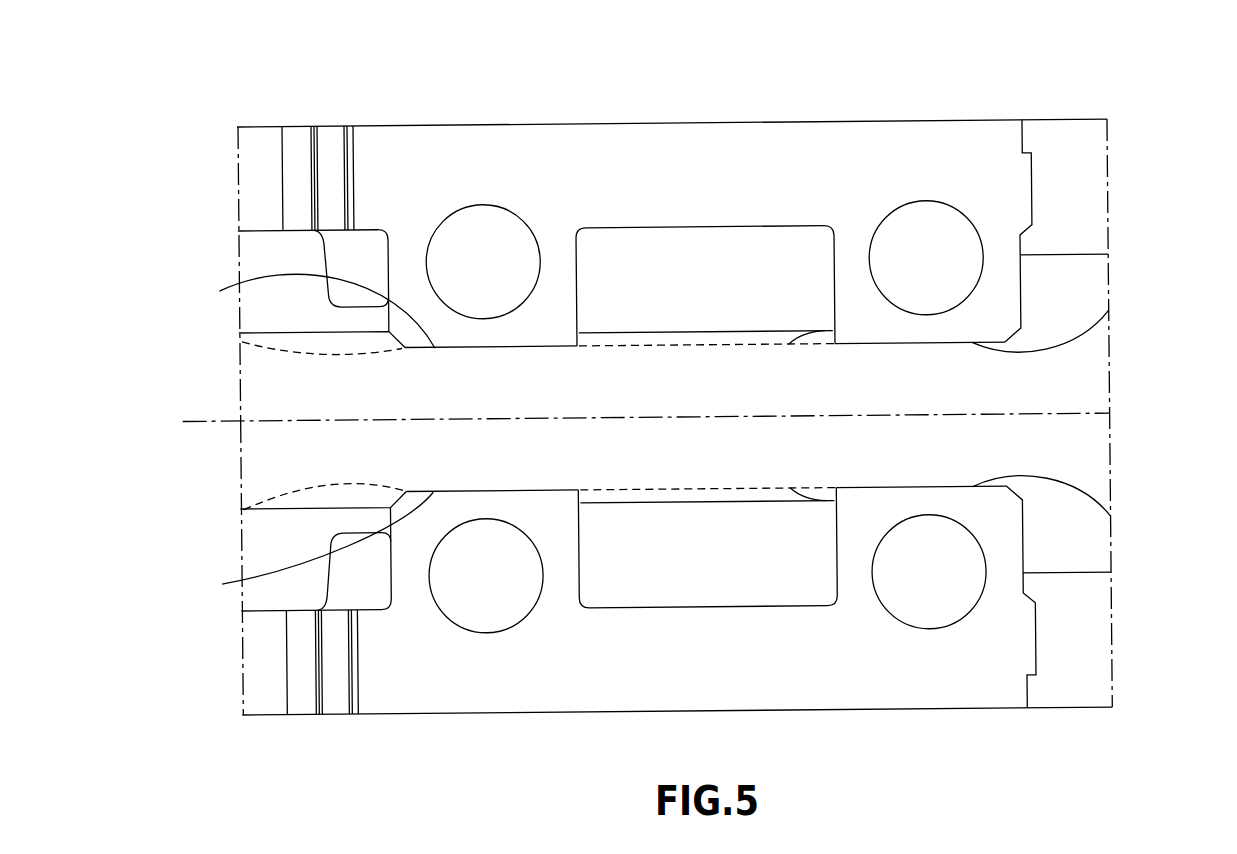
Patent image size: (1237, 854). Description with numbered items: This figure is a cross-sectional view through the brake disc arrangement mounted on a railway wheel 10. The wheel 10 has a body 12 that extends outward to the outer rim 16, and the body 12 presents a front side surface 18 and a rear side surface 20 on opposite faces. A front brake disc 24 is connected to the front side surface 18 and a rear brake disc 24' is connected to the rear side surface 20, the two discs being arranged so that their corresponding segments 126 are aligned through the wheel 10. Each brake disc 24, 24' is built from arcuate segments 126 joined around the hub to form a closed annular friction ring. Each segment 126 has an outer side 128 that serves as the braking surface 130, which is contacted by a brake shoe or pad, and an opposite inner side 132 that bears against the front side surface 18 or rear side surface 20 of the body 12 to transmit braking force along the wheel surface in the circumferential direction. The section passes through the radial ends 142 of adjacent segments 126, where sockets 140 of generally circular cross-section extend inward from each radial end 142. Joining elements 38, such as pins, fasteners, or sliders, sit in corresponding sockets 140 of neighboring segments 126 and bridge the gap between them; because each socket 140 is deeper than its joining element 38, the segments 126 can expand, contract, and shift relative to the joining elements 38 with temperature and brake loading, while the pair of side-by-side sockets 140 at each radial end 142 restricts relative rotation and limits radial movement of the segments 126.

The railway wheel 10 is at (1068, 94).
The body 12 is at (710, 397).
The outer rim 16 is at (1108, 382).
The front side surface 18 is at (627, 348).
The rear side surface 20 is at (648, 491).
The front brake disc 24 is at (417, 221).
The rear brake disc 24' is at (719, 604).
The joining element 38 is at (500, 242).
The segment 126 is at (680, 157).
The outer side 128 is at (674, 418).
The braking surface 130 is at (850, 121).
The inner side 132 is at (222, 292).
The socket 140 is at (709, 409).
The radial end 142 is at (737, 157).